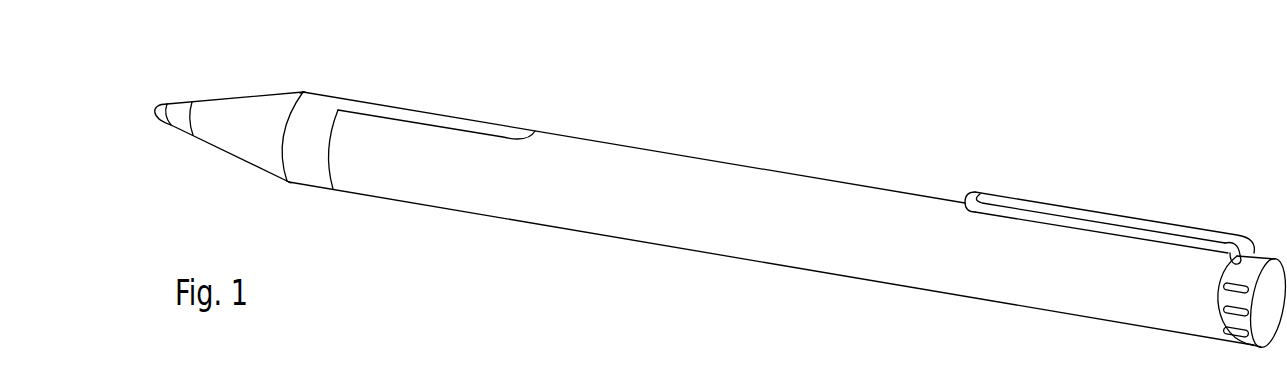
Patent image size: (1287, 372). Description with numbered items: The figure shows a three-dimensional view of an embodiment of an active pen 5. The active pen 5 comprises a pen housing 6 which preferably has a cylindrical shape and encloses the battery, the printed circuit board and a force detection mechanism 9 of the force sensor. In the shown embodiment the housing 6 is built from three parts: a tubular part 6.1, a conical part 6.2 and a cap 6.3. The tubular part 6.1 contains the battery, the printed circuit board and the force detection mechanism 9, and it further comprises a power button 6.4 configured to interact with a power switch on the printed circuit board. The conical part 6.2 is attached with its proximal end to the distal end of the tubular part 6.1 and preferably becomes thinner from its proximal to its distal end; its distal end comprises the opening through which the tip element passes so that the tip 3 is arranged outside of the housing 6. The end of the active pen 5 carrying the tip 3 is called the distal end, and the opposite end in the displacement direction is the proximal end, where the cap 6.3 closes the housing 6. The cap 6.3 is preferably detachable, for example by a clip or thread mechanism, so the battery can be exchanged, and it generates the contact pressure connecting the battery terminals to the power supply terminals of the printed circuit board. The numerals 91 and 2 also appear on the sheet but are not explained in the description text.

The active pen 5 is at (937, 117).
The pen housing 6 is at (548, 260).
The tubular part 6.1 is at (710, 195).
The conical part 6.2 is at (303, 127).
The cap 6.3 is at (1253, 265).
The power button 6.4 is at (497, 132).
The tip 3 is at (175, 115).
The force detection mechanism 9 is at (302, 371).
The component of lower figure 91 is at (345, 363).
The component of lower figure 2 is at (177, 367).